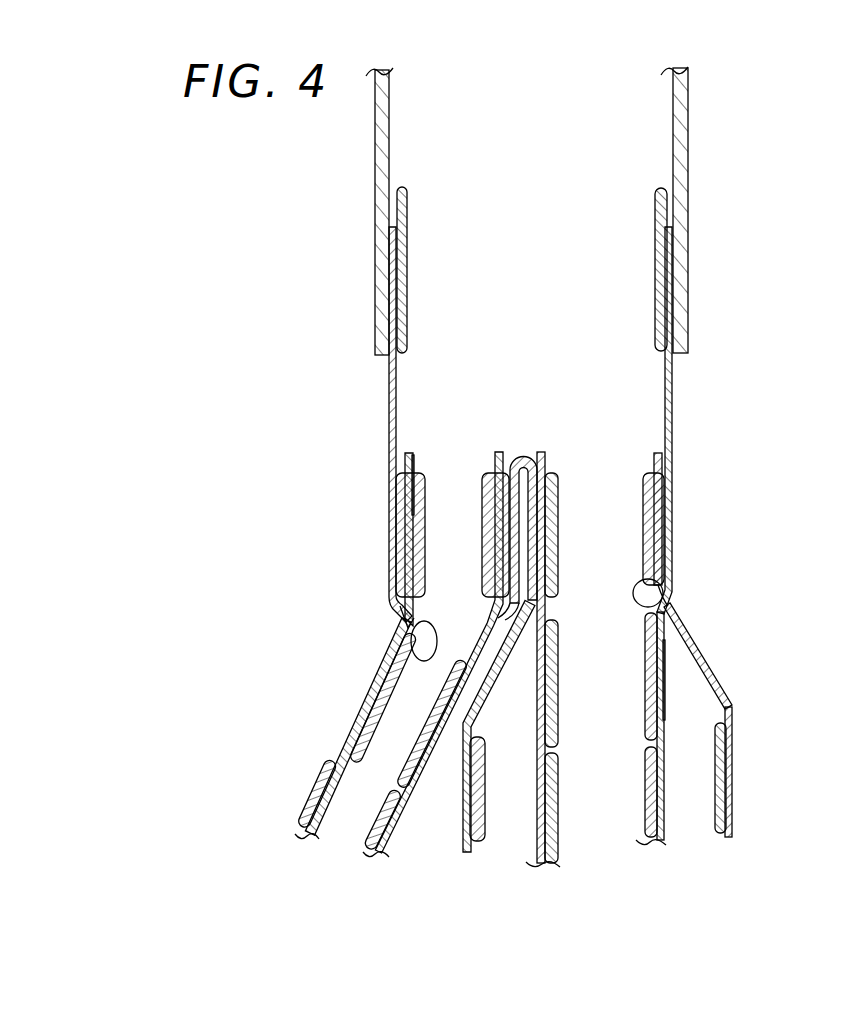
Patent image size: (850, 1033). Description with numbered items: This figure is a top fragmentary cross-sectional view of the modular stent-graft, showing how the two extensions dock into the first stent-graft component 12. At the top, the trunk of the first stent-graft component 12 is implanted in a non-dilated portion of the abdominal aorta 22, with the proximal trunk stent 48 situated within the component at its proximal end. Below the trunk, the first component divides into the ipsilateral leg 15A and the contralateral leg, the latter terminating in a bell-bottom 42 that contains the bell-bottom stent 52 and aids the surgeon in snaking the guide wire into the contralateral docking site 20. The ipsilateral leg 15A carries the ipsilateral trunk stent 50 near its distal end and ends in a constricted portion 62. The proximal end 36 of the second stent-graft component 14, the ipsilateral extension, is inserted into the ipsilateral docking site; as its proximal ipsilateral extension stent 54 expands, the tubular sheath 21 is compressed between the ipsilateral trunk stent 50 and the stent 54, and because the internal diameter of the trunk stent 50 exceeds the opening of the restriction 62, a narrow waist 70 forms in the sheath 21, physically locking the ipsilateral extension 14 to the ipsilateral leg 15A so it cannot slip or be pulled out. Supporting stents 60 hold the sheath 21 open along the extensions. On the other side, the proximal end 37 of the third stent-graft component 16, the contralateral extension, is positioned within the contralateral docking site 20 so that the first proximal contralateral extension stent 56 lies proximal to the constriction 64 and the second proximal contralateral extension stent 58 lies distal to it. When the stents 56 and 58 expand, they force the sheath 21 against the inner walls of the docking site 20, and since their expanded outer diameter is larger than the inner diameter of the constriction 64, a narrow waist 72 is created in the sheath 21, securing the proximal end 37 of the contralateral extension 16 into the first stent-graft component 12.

The first stent-graft component 12 is at (389, 370).
The second stent-graft component 14 is at (330, 776).
The ipsilateral leg 15A is at (450, 545).
The third stent-graft component 16 is at (662, 795).
The contralateral docking site 20 is at (603, 537).
The tubular sheath 21 is at (413, 462).
The abdominal aorta 22 is at (378, 147).
The proximal end of the second stent-graft component 36 is at (455, 455).
The proximal end of the third stent-graft component 37 is at (699, 476).
The bell-bottom 42 is at (735, 792).
The proximal trunk stent 48 is at (402, 250).
The ipsilateral trunk stent 50 is at (396, 578).
The bell-bottom stent 52 is at (731, 757).
The proximal ipsilateral extension stent 54 is at (420, 506).
The first proximal contralateral extension stent 56 is at (650, 499).
The second proximal contralateral extension stent 58 is at (650, 668).
The supporting stents 60 is at (360, 722).
The constricted portion 62 is at (404, 620).
The constricted portion 64 is at (669, 604).
The narrow waist 70 is at (406, 654).
The narrow waist 72 is at (652, 577).